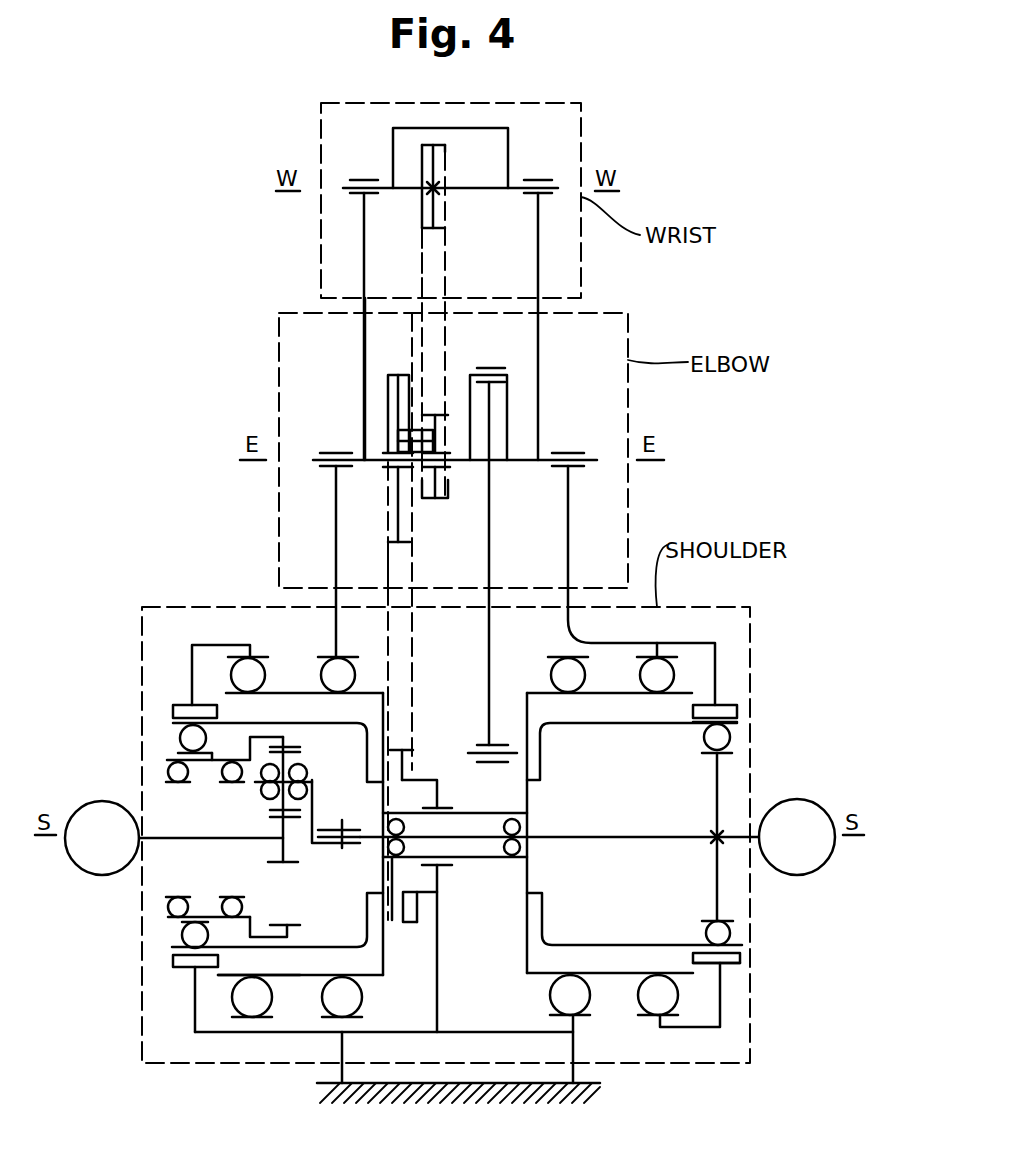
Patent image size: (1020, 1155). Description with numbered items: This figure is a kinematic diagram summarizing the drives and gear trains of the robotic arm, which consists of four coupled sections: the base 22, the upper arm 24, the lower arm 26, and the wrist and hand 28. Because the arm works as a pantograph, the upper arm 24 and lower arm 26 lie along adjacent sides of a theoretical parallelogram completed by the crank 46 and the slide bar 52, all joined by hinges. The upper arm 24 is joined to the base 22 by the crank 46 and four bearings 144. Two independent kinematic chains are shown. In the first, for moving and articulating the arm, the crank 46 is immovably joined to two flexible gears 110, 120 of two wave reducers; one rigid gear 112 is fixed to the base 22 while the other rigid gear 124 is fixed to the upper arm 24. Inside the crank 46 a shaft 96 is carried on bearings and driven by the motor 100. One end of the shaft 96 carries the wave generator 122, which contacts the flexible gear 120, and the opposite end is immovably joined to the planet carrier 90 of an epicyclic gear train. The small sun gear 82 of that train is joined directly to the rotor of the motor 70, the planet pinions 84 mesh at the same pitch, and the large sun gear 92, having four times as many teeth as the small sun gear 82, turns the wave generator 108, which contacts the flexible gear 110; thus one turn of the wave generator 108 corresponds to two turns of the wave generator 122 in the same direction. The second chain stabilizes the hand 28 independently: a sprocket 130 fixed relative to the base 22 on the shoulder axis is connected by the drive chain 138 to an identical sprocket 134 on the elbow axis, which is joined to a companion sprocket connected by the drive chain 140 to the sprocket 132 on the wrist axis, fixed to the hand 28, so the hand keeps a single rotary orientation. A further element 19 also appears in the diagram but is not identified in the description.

The gear 19 is at (417, 907).
The base 22 is at (437, 950).
The upper arm 24 is at (335, 502).
The lower arm 26 is at (365, 345).
The hand 28 is at (393, 150).
The crank 46 is at (617, 977).
The slide bar 52 is at (490, 528).
The motor 70 is at (118, 803).
The small sun gear 82 is at (270, 850).
The planet pinions 84 is at (282, 808).
The planet carrier 90 is at (370, 747).
The large sun gear 92 is at (243, 747).
The shaft 96 is at (645, 838).
The motor 100 is at (823, 865).
The wave generator 108 is at (185, 932).
The flexible gear 110 is at (245, 950).
The rigid gear 112 is at (175, 960).
The flexible gear 120 is at (645, 725).
The wave generator 122 is at (730, 935).
The rigid gear 124 is at (740, 958).
The first sprocket 130 is at (433, 428).
The second sprocket 132 is at (432, 208).
The third sprocket 134 is at (397, 397).
The first drive chain 138 is at (388, 562).
The second drive chain 140 is at (420, 258).
The bearings 144 is at (293, 690).